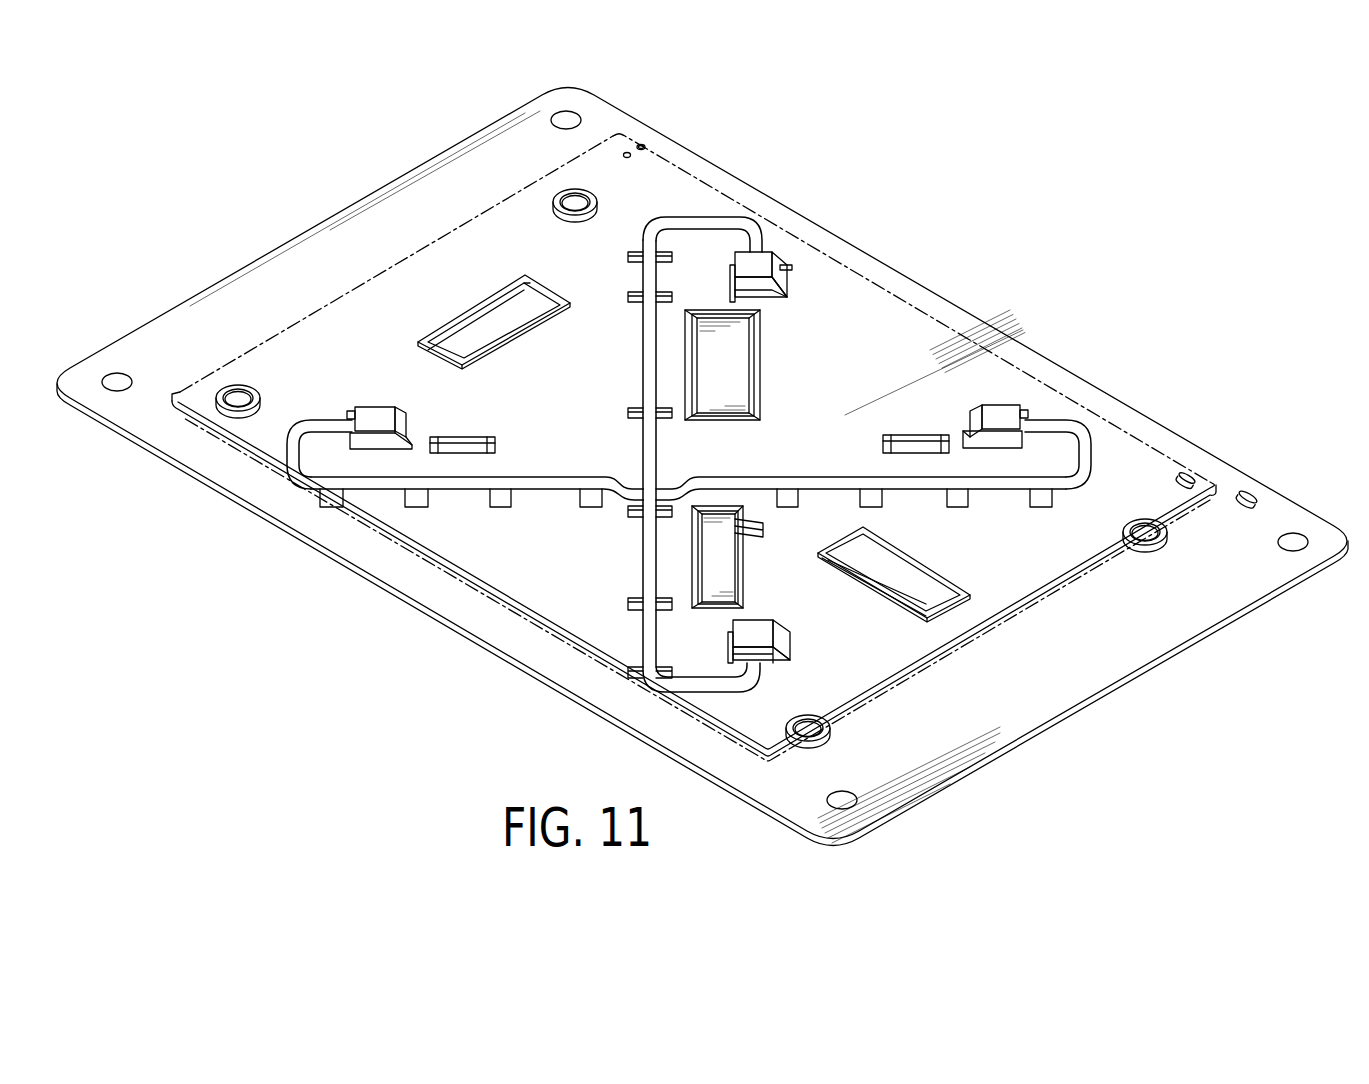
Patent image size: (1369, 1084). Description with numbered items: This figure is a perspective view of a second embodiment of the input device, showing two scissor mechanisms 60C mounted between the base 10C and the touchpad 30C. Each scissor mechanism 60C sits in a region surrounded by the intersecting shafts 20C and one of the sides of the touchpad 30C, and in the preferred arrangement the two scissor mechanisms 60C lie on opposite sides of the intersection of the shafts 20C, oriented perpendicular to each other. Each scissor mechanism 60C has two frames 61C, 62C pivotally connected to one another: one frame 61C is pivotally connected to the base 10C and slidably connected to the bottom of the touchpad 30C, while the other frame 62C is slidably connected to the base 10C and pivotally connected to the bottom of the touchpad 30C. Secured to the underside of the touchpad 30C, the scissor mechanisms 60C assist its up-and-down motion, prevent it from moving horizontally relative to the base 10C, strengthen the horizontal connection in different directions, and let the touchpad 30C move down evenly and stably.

The base 10C is at (1162, 394).
The intersecting shafts 20C is at (1106, 465).
The touchpad 30C is at (900, 312).
The scissor mechanism 60C is at (446, 298).
The frame 61C is at (900, 546).
The frame 62C is at (840, 578).